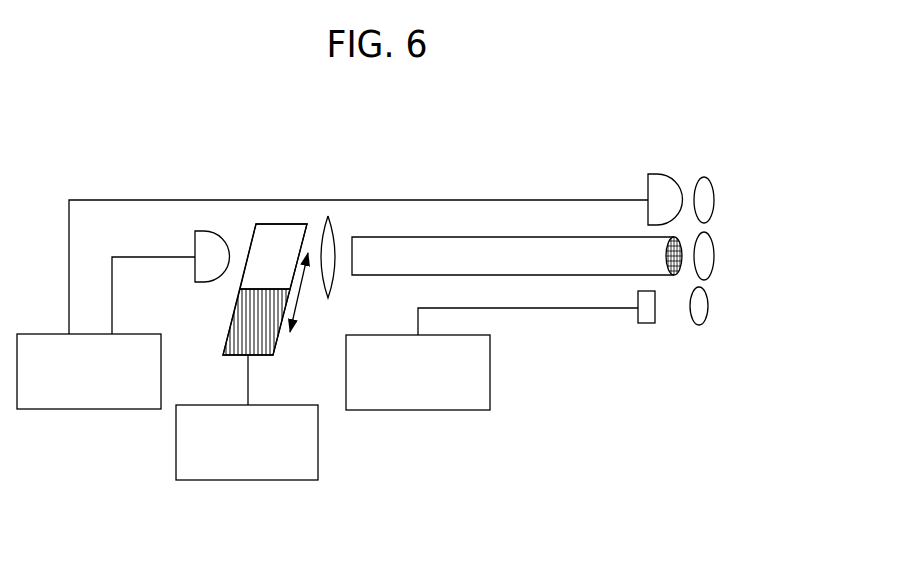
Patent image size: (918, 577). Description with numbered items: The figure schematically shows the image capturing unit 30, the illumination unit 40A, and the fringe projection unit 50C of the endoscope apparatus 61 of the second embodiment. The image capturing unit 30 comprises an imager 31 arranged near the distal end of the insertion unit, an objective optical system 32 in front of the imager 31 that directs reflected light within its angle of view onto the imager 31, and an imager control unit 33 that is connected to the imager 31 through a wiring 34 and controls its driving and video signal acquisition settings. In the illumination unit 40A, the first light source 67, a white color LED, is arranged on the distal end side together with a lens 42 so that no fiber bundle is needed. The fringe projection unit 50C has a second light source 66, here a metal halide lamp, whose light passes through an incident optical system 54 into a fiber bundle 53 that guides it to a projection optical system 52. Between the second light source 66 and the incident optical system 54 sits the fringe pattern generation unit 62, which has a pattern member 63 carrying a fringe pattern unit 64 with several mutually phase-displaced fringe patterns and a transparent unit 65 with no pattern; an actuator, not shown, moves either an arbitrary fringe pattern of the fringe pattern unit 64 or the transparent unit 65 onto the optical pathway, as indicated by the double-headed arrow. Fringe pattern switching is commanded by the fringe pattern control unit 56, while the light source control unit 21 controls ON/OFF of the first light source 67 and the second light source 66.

The light source control unit 21 is at (83, 409).
The image capturing unit 30 is at (674, 327).
The imager 31 is at (648, 325).
The objective optical system 32 is at (710, 308).
The imager control unit 33 is at (413, 412).
The wiring 34 is at (548, 310).
The illumination unit 40A is at (725, 182).
The illumination lens 42 is at (716, 199).
The fringe projection unit 50C is at (725, 277).
The projection optical system 52 is at (716, 254).
The fiber bundle 53 is at (510, 237).
The incident optical system 54 is at (337, 232).
The fringe pattern control unit 56 is at (240, 482).
The endoscope apparatus 61 is at (590, 170).
The fringe pattern generation unit 62 is at (204, 357).
The pattern member 63 is at (225, 141).
The fringe pattern unit 64 is at (233, 310).
The transparent unit 65 is at (280, 223).
The second light source 66 is at (203, 282).
The first light source 67 is at (683, 180).